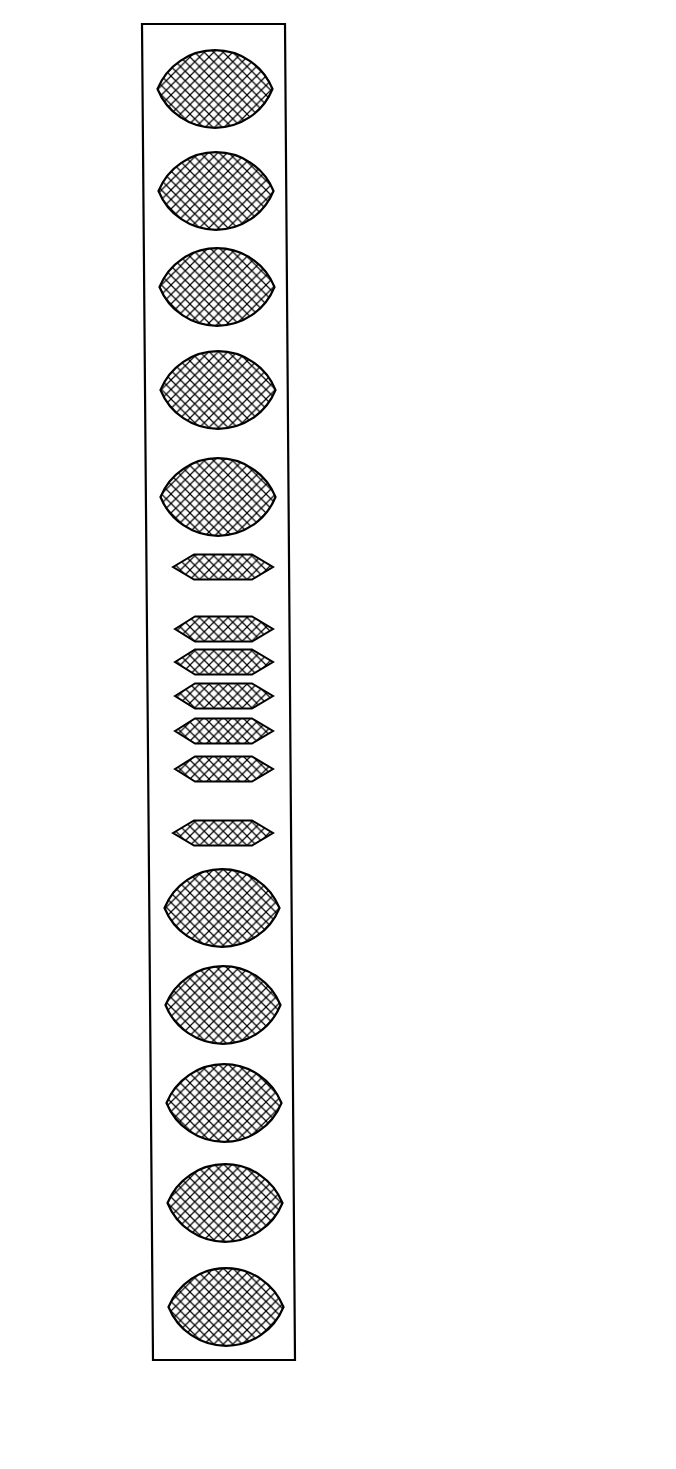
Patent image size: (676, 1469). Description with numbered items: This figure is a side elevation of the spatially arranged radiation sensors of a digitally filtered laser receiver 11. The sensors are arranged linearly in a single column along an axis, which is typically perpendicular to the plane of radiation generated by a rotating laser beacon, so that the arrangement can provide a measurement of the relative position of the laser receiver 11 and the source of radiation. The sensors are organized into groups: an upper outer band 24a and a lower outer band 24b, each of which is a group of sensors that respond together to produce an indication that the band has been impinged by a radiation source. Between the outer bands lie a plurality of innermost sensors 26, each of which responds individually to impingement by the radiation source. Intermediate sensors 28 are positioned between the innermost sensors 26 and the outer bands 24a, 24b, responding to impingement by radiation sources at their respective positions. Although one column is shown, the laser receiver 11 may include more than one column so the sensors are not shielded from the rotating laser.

The digitally filtered laser receiver 11 is at (285, 24).
The outer band 24a is at (134, 58).
The outer band 24b is at (133, 883).
The innermost sensor 26 is at (271, 632).
The intermediate sensor 28 is at (271, 570).